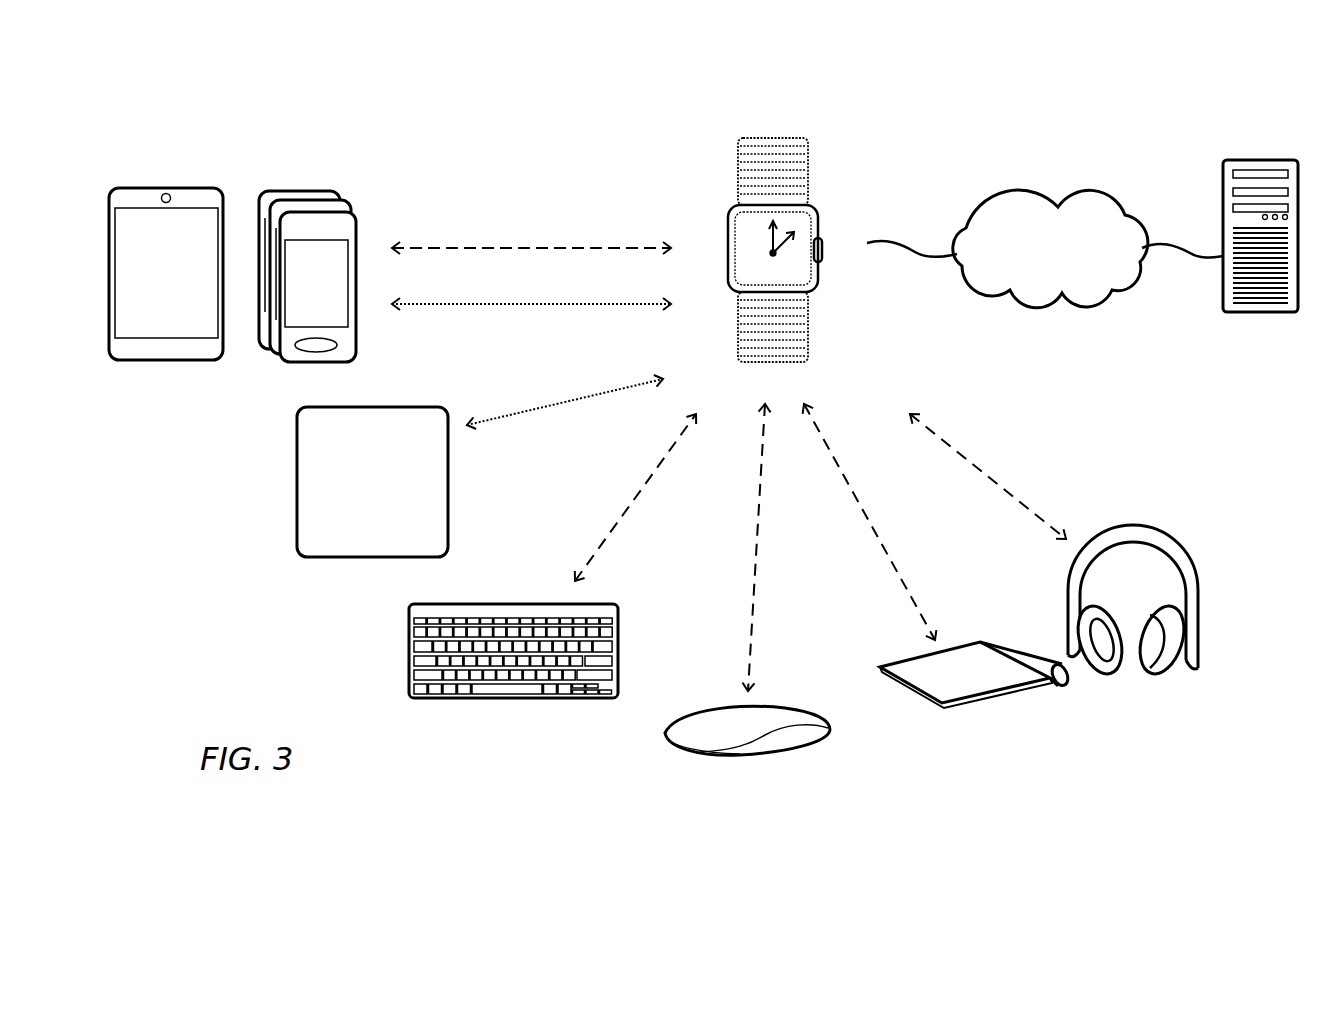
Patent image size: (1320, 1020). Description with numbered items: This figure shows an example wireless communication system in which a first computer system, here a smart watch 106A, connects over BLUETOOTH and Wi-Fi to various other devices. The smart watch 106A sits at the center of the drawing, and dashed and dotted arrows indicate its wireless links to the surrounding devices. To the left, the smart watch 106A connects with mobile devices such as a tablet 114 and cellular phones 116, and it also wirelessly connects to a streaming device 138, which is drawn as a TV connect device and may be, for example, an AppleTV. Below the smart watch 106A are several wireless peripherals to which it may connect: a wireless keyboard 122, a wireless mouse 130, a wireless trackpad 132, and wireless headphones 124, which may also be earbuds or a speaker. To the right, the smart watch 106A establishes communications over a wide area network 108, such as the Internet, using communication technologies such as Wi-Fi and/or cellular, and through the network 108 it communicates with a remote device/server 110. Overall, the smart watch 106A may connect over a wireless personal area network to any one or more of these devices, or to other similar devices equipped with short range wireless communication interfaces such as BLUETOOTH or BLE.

The smart watch 106A is at (780, 138).
The wide area network 108 is at (1040, 191).
The remote device/server 110 is at (1258, 160).
The tablet 114 is at (166, 188).
The cellular phone 116 is at (300, 191).
The wireless keyboard 122 is at (508, 698).
The wireless headphones 124 is at (1127, 525).
The wireless mouse 130 is at (720, 755).
The wireless trackpad 132 is at (948, 705).
The streaming device 138 is at (352, 557).